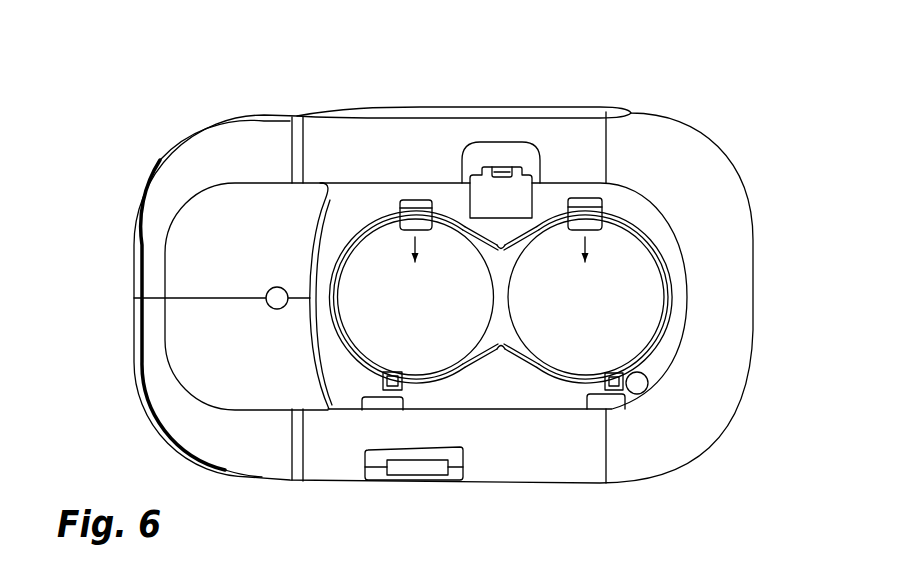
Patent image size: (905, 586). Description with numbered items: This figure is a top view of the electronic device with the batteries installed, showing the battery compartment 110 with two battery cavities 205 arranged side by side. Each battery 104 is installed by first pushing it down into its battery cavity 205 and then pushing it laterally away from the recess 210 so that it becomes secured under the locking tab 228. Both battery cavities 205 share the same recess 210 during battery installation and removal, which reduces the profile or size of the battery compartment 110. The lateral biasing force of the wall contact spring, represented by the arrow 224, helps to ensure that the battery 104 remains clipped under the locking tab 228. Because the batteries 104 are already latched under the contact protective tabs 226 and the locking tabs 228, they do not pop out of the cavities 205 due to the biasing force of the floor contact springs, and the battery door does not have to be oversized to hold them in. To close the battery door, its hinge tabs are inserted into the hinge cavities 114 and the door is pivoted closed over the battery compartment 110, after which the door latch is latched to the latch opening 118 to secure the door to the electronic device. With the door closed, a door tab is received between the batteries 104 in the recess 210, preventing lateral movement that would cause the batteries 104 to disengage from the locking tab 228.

The battery compartment 110 is at (362, 208).
The battery 104 is at (372, 318).
The hinge cavity 114 is at (369, 404).
The latch opening 118 is at (488, 200).
The battery cavity 205 is at (452, 217).
The recess 210 is at (505, 267).
The arrow representing lateral biasing force 224 is at (413, 240).
The contact protective tab 226 is at (582, 213).
The locking tab 228 is at (616, 392).